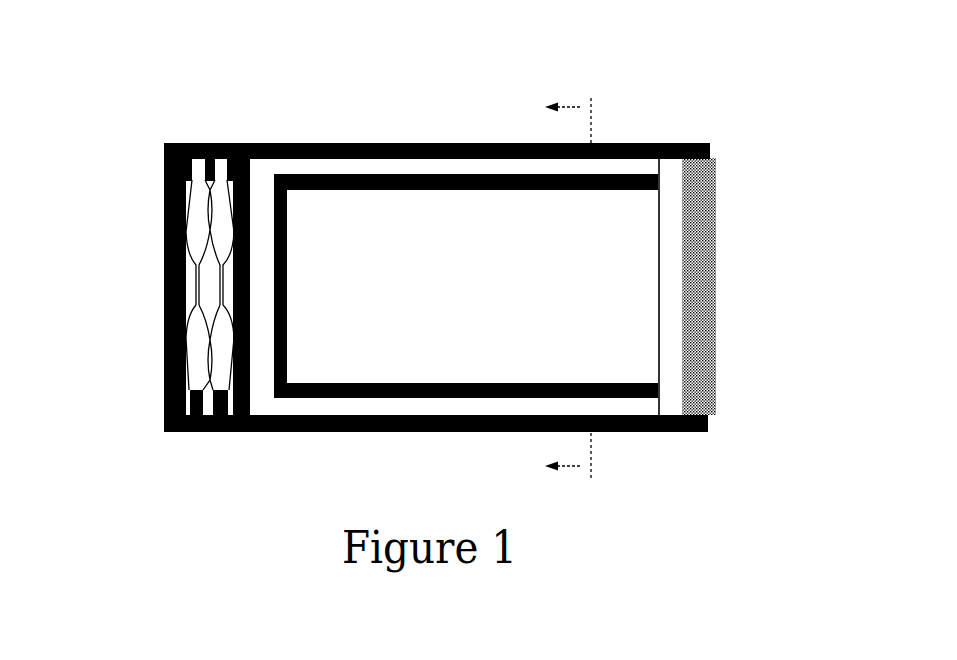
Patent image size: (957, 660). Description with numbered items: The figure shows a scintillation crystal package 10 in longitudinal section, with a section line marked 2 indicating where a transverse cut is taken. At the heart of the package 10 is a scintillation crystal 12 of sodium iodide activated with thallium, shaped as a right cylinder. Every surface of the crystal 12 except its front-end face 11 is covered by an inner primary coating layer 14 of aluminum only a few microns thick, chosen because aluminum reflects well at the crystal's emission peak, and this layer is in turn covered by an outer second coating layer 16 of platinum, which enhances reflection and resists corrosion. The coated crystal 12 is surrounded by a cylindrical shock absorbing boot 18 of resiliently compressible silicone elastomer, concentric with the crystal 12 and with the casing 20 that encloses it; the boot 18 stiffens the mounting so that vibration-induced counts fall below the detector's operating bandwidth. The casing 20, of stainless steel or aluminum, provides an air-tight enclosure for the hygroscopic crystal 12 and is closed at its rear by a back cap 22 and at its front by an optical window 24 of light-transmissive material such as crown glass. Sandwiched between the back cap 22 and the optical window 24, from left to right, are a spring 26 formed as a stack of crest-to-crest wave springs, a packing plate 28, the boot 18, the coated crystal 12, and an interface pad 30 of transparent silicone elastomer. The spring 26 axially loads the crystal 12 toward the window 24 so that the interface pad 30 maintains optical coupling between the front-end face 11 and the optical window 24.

The scintillation crystal package 10 is at (362, 117).
The front-end face 11 is at (660, 362).
The scintillation crystal 12 is at (478, 300).
The primary coating layer 14 is at (568, 190).
The second coating layer 16 is at (625, 190).
The shock absorbing boot 18 is at (452, 167).
The casing 20 is at (325, 143).
The back cap 22 is at (163, 255).
The optical window 24 is at (716, 193).
The spring 26 is at (163, 157).
The packing plate 28 is at (233, 322).
The interface pad 30 is at (668, 332).
The section line 2 is at (583, 289).